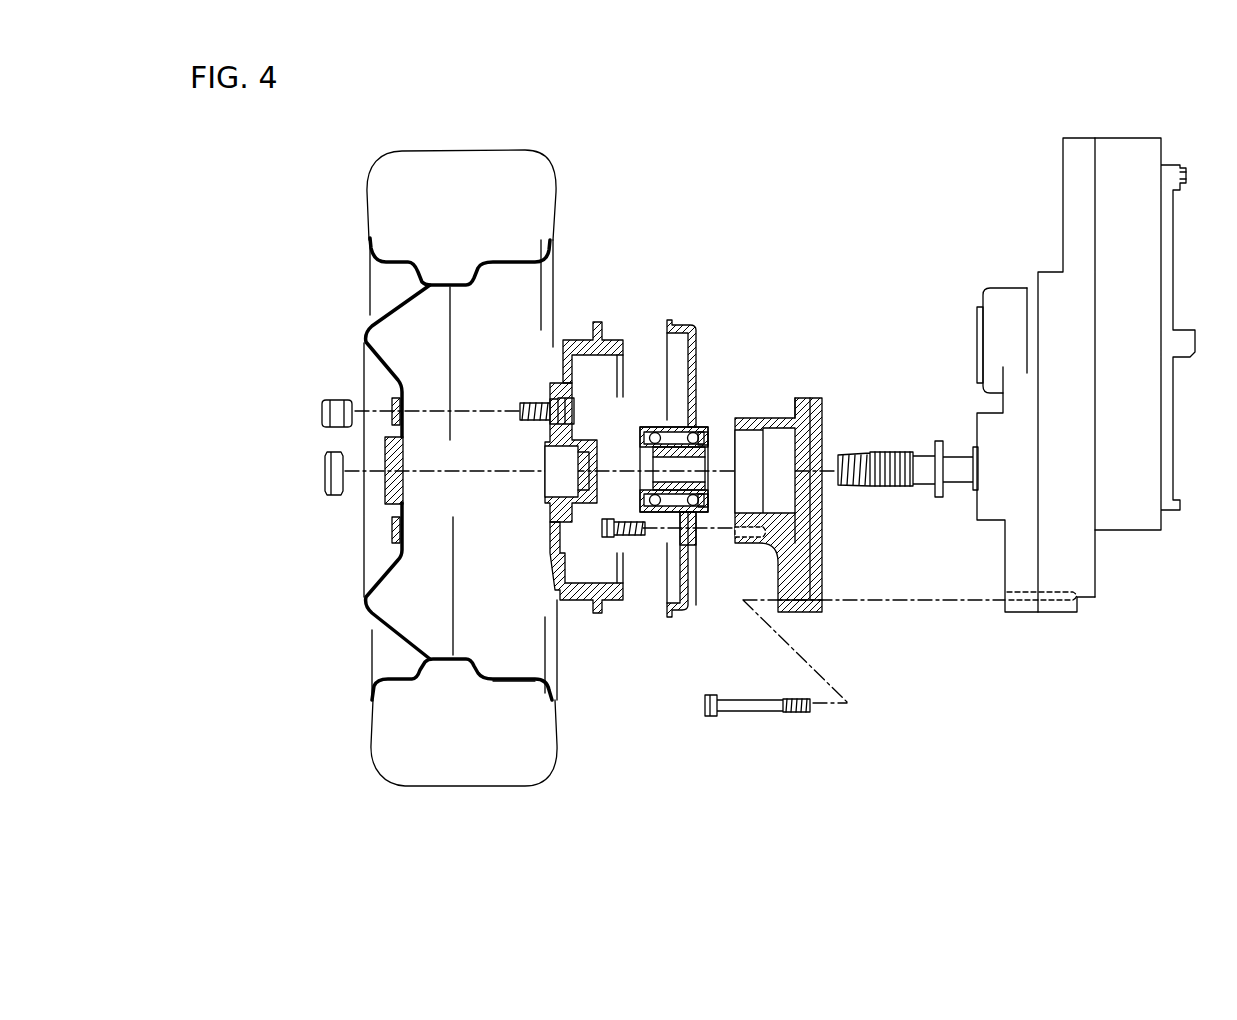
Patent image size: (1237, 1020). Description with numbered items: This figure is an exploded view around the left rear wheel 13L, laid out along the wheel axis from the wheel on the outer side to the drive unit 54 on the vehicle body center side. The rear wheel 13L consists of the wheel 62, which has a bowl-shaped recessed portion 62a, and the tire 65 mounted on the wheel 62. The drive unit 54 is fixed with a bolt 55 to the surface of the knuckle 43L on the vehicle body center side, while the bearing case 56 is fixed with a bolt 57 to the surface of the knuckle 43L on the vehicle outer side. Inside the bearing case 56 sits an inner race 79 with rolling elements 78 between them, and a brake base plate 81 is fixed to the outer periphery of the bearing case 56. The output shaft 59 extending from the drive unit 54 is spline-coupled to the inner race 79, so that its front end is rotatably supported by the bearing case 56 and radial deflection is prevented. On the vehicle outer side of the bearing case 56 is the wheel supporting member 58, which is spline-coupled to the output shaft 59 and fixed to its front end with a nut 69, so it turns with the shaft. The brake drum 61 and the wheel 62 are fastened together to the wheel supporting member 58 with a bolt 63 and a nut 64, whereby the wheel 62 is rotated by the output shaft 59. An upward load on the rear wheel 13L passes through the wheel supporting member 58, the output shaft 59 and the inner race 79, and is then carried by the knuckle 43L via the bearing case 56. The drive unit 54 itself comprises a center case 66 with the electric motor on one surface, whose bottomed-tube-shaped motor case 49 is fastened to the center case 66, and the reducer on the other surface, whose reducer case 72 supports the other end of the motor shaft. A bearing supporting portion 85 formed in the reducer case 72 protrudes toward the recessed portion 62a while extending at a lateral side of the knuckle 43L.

The rear wheel 13L is at (360, 164).
The tire 65 is at (365, 198).
The wheel 62 is at (392, 290).
The recessed portion 62a is at (509, 673).
The nut 64 is at (330, 400).
The nut 69 is at (330, 490).
The bolt 63 is at (528, 402).
The brake drum 61 is at (584, 325).
The wheel supporting member 58 is at (545, 443).
The bolt 57 is at (633, 540).
The bearing case 56 is at (662, 428).
The rolling elements 78 is at (690, 430).
The inner race 79 is at (696, 455).
The brake base plate 81 is at (693, 620).
The knuckle 43L is at (803, 398).
The output shaft 59 is at (895, 455).
The bolt 55 is at (750, 706).
The drive unit 54 is at (1080, 631).
The bearing supporting portion 85 is at (976, 306).
The reducer case 72 is at (1008, 298).
The center case 66 is at (1082, 150).
The motor case 49 is at (1128, 150).